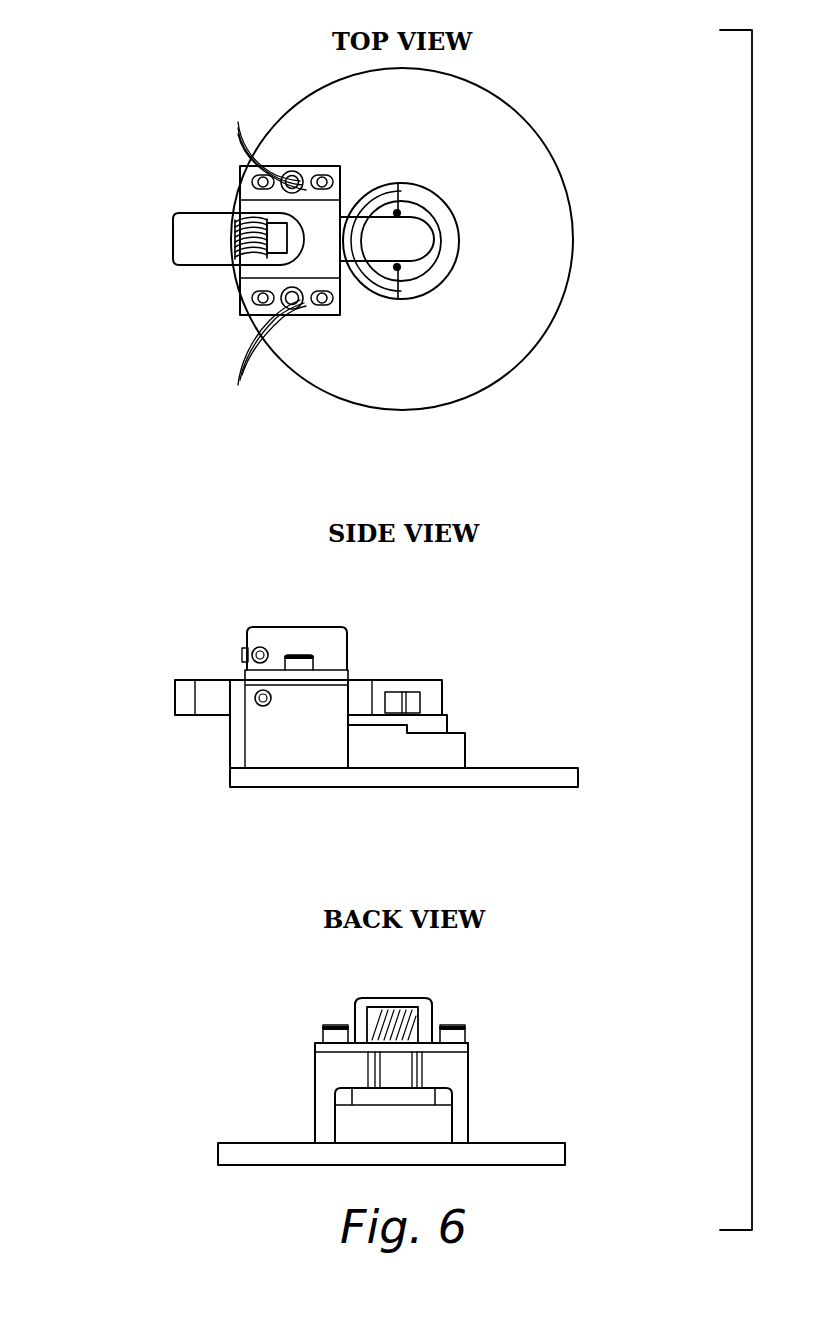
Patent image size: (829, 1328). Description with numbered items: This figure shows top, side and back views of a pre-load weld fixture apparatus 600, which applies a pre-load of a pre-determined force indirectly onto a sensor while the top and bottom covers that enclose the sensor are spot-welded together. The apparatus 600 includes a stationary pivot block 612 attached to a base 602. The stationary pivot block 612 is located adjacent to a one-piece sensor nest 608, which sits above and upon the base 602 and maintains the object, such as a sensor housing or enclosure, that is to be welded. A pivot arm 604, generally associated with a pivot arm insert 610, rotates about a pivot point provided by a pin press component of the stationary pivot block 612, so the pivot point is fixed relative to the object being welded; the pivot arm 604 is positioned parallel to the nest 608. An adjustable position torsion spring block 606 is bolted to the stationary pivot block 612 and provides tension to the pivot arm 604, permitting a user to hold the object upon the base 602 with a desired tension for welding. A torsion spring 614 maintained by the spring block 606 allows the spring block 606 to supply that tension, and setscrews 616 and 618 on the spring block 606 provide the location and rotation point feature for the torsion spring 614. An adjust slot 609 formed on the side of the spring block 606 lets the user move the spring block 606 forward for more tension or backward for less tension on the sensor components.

The pre-load weld fixture apparatus 600 is at (102, 60).
The base 602 is at (543, 242).
The pivot arm 604 is at (186, 232).
The adjustable position torsion spring block 606 is at (240, 213).
The one-piece sensor nest 608 is at (452, 750).
The adjust slot 609 is at (252, 650).
The pivot arm insert 610 is at (416, 690).
The stationary pivot block 612 is at (250, 732).
The torsion spring 614 is at (236, 247).
The setscrew 616 is at (238, 122).
The setscrew 618 is at (238, 385).